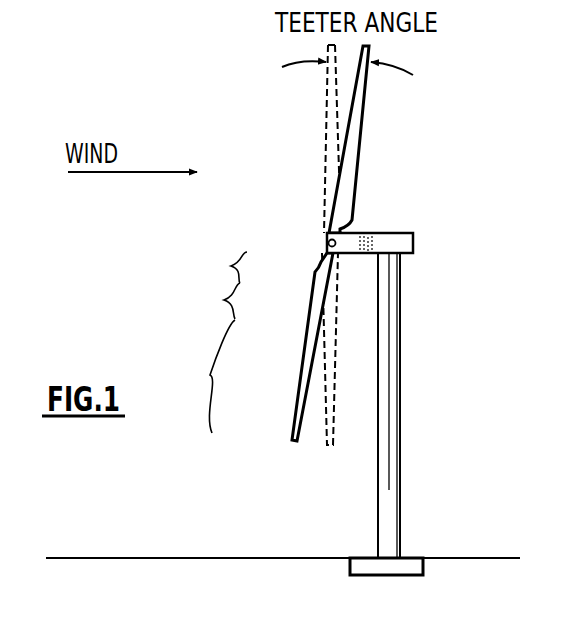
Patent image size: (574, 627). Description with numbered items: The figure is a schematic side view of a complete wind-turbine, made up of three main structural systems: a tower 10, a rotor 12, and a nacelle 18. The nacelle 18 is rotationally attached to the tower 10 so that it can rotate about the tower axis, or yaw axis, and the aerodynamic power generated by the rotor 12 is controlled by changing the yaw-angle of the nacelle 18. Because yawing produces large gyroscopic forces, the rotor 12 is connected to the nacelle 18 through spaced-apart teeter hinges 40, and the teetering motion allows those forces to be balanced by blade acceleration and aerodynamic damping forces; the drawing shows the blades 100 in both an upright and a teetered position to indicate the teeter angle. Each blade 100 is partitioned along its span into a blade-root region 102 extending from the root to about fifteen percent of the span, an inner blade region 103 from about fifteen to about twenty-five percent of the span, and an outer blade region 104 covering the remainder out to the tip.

The tower 10 is at (378, 497).
The rotor 12 is at (307, 226).
The nacelle 18 is at (397, 233).
The teeter hinges 40 is at (328, 246).
The blade 100 is at (360, 141).
The blade-root region 102 is at (217, 265).
The inner blade region 103 is at (210, 301).
The outer blade region 104 is at (200, 376).